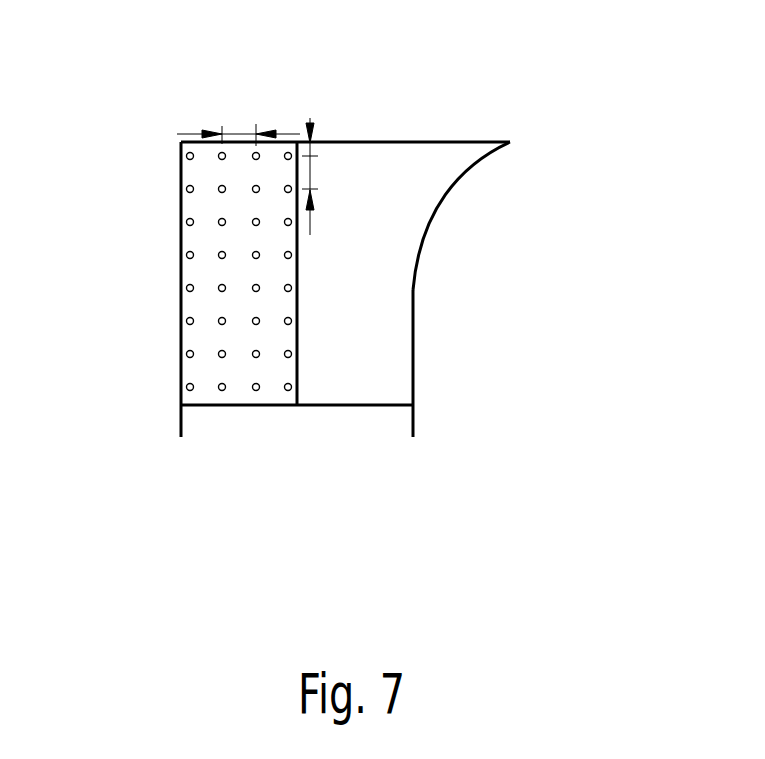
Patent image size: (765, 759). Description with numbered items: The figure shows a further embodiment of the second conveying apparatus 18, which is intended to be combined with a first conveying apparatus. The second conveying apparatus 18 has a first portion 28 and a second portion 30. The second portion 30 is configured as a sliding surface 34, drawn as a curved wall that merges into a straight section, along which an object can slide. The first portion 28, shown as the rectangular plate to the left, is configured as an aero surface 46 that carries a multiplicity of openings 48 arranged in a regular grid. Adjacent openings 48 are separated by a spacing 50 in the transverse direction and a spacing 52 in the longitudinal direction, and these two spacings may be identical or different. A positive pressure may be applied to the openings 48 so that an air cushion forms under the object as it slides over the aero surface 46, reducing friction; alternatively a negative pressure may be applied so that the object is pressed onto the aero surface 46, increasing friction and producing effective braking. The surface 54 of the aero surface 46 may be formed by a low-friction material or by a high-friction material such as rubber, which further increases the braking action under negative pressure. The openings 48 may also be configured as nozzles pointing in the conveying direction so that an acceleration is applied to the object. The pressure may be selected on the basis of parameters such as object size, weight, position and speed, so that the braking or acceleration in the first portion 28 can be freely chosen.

The second conveying apparatus 18 is at (617, 247).
The first portion 28 is at (188, 337).
The second portion 30 is at (400, 363).
The sliding surface 34 is at (413, 290).
The aero surface 46 is at (190, 237).
The openings/nozzles 48 is at (185, 157).
The spacing in the transverse direction 50 is at (238, 134).
The spacing in the longitudinal direction 52 is at (310, 172).
The surface of the aero surface 54 is at (210, 300).